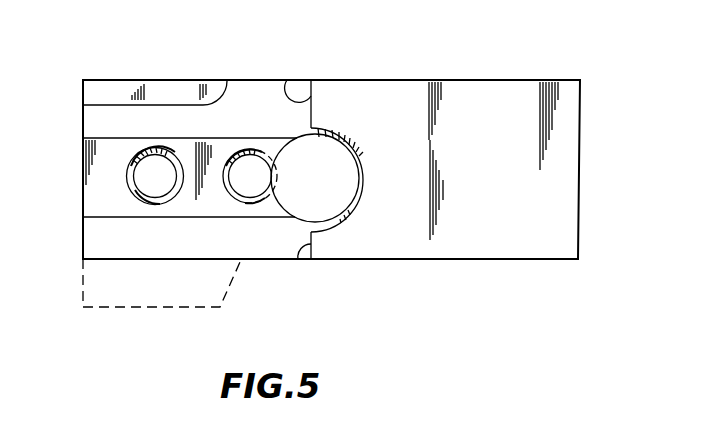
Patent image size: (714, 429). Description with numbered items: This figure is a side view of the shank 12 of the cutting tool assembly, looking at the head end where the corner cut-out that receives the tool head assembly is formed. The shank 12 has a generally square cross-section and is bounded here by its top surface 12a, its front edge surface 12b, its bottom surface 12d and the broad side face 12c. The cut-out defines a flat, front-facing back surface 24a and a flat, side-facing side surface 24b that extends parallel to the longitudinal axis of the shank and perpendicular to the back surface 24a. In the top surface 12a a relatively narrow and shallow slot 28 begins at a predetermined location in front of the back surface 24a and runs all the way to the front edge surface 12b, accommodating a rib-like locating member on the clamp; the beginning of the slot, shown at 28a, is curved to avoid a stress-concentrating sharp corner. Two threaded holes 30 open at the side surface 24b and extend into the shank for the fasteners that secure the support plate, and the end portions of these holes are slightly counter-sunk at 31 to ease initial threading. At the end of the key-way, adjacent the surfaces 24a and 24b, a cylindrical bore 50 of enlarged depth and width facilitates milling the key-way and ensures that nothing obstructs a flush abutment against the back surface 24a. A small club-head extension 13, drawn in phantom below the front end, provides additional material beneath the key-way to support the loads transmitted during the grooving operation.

The shank 12 is at (408, 60).
The top surface 12a is at (464, 80).
The front edge surface 12b is at (83, 238).
The plate face 12c is at (500, 175).
The bottom surface 12d is at (490, 260).
The club-head extension 13 is at (83, 299).
The back surface 24a is at (300, 79).
The side surface 24b is at (268, 126).
The slot 28 is at (158, 92).
The slot end portion 28a is at (124, 104).
The threaded holes 30 is at (230, 187).
The counter-sunk end portions 31 is at (173, 126).
The cylindrical bore 50 is at (356, 212).